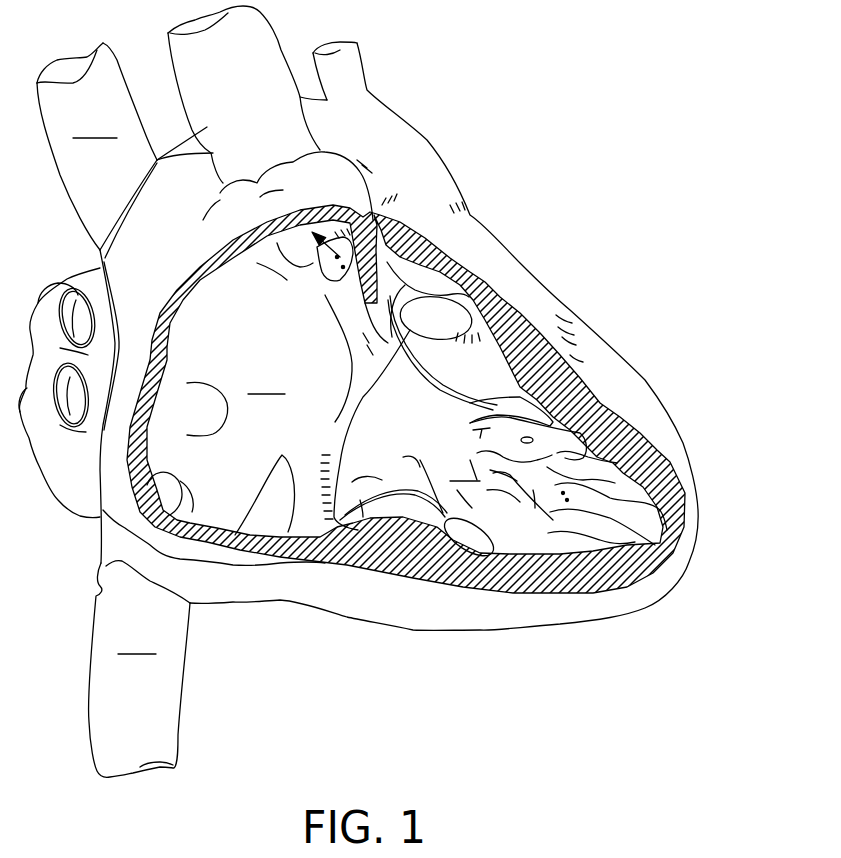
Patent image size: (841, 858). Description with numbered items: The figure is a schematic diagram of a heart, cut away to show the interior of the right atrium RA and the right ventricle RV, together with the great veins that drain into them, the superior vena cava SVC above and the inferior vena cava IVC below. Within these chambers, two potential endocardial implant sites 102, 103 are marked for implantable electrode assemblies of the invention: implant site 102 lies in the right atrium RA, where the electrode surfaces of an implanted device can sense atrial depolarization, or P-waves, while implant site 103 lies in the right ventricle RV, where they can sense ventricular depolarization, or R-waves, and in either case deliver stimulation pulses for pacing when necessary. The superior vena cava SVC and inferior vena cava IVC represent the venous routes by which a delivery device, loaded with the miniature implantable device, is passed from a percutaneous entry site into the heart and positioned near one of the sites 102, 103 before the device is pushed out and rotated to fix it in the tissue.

The endocardial implant site 102 is at (376, 222).
The endocardial implant site 103 is at (533, 522).
The superior vena cava SVC is at (97, 146).
The inferior vena cava IVC is at (139, 669).
The right atrium RA is at (250, 382).
The right ventricle RV is at (535, 481).